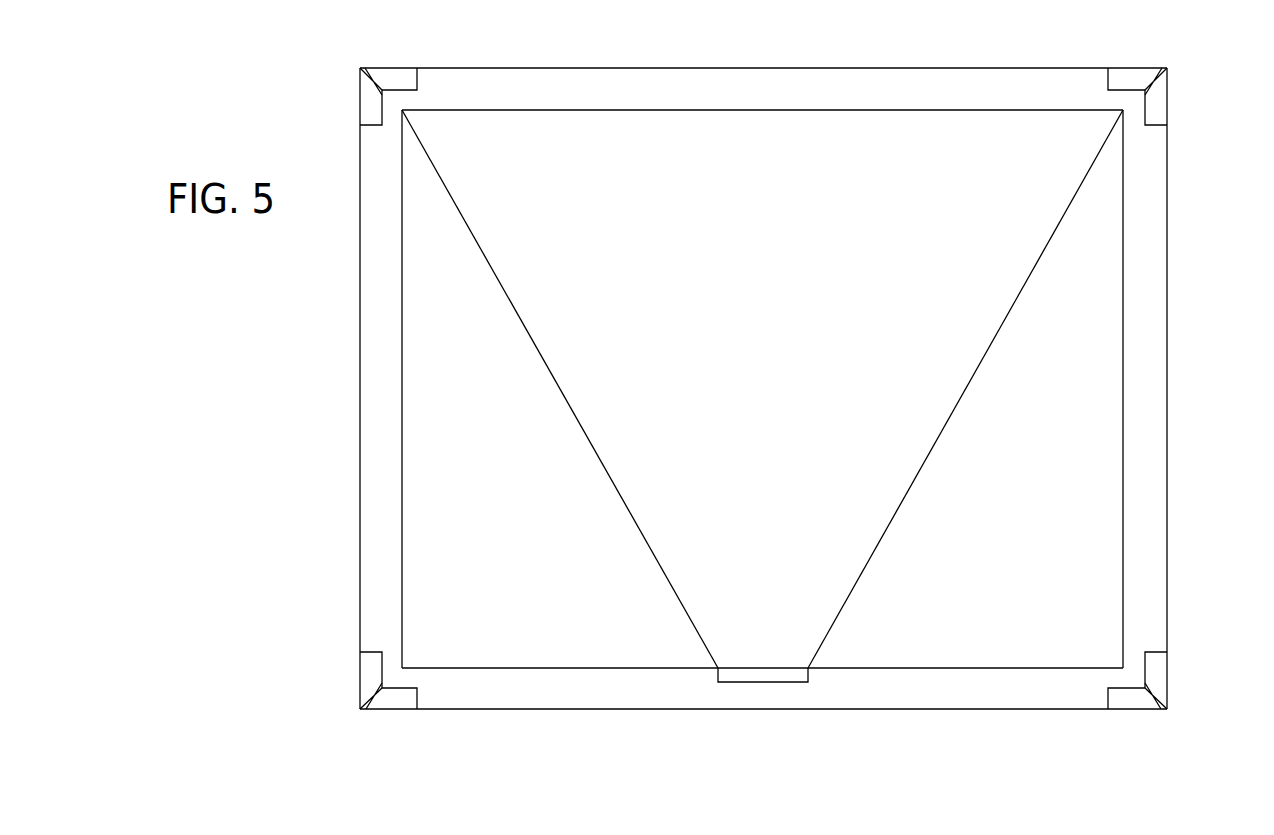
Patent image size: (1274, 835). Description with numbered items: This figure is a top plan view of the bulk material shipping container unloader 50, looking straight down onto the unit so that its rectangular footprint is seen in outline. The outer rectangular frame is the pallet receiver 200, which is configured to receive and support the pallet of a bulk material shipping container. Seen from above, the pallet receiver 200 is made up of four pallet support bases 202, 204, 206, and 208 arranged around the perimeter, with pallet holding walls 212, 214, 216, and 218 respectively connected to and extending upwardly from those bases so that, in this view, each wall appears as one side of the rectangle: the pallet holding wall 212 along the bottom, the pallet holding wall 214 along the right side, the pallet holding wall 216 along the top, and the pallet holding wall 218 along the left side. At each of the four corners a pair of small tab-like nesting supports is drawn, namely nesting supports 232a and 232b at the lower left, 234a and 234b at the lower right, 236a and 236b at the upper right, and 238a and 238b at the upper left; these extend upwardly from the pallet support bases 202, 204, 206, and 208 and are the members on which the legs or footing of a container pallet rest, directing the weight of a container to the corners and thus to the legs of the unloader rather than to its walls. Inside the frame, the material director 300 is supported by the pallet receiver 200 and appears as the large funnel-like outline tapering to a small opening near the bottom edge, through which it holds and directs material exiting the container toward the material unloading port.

The bulk material shipping container unloader 50 is at (277, 541).
The pallet receiver 200 is at (1169, 298).
The pallet support base 202 is at (565, 688).
The pallet support base 204 is at (1140, 334).
The pallet support base 206 is at (731, 95).
The pallet support base 208 is at (384, 334).
The pallet holding wall 212 is at (892, 710).
The pallet holding wall 214 is at (1168, 382).
The pallet holding wall 216 is at (645, 67).
The pallet holding wall 218 is at (359, 382).
The nesting support 232a is at (400, 697).
The nesting support 232b is at (368, 674).
The nesting support 234a is at (1127, 697).
The nesting support 234b is at (1159, 673).
The nesting support 236a is at (1158, 107).
The nesting support 236b is at (1126, 80).
The nesting support 238a is at (401, 80).
The nesting support 238b is at (369, 107).
The material director 300 is at (848, 198).